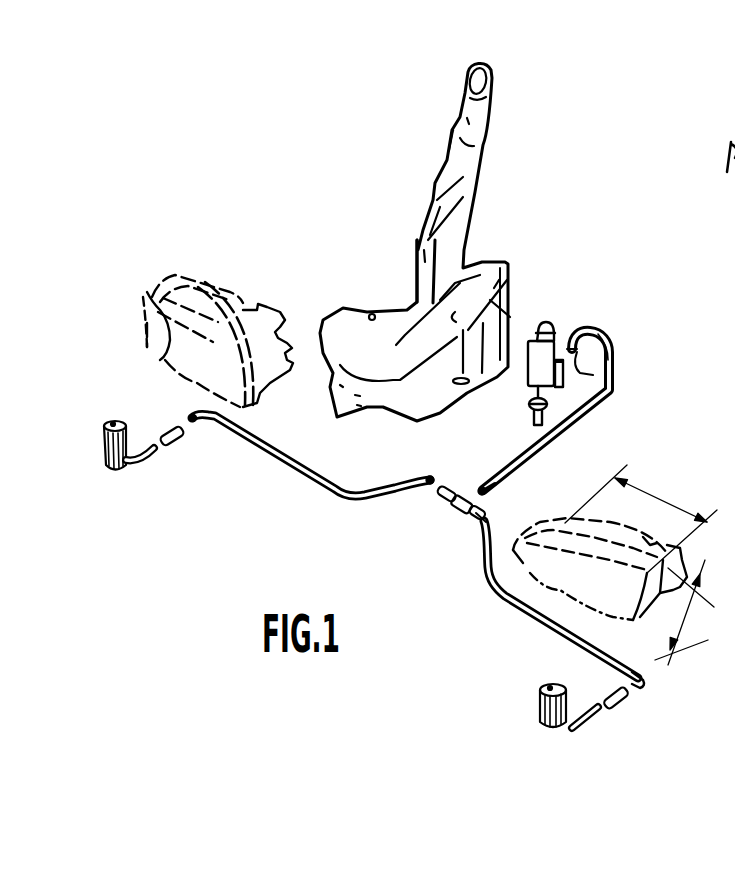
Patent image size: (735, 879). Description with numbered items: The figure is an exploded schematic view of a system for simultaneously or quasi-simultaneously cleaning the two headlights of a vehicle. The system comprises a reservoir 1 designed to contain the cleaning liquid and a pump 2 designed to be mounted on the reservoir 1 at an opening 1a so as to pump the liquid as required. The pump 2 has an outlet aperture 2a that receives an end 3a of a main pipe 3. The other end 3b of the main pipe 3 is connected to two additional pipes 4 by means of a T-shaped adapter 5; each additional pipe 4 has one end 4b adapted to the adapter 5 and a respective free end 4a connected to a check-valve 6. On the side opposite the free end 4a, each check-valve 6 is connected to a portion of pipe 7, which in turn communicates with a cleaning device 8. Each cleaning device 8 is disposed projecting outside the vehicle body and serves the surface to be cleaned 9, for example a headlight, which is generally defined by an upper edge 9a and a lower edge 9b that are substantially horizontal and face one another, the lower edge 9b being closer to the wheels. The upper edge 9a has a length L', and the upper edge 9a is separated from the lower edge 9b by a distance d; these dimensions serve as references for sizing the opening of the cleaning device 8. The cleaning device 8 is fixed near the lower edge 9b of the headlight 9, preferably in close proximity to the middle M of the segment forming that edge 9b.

The reservoir 1 is at (480, 182).
The opening 1a is at (515, 318).
The pump 2 is at (523, 375).
The outlet aperture 2a is at (560, 352).
The main pipe 3 is at (611, 350).
The end of main pipe 3a is at (610, 373).
The other end of main pipe 3b is at (500, 502).
The additional pipe 4 is at (253, 450).
The free end of additional pipe 4a is at (643, 681).
The end adapted to the adapter 4b is at (478, 523).
The T-shaped adapter 5 is at (440, 508).
The check-valve 6 is at (620, 702).
The portion of pipe 7 is at (588, 730).
The cleaning device 8 is at (540, 713).
The surface to be cleaned 9 is at (227, 274).
The upper edge 9a is at (232, 297).
The lower edge 9b is at (147, 292).
The middle of the segment forming the lower edge M is at (559, 585).
The length of the upper edge L' is at (641, 516).
The distance separating the upper edge from the lower edge d is at (684, 612).